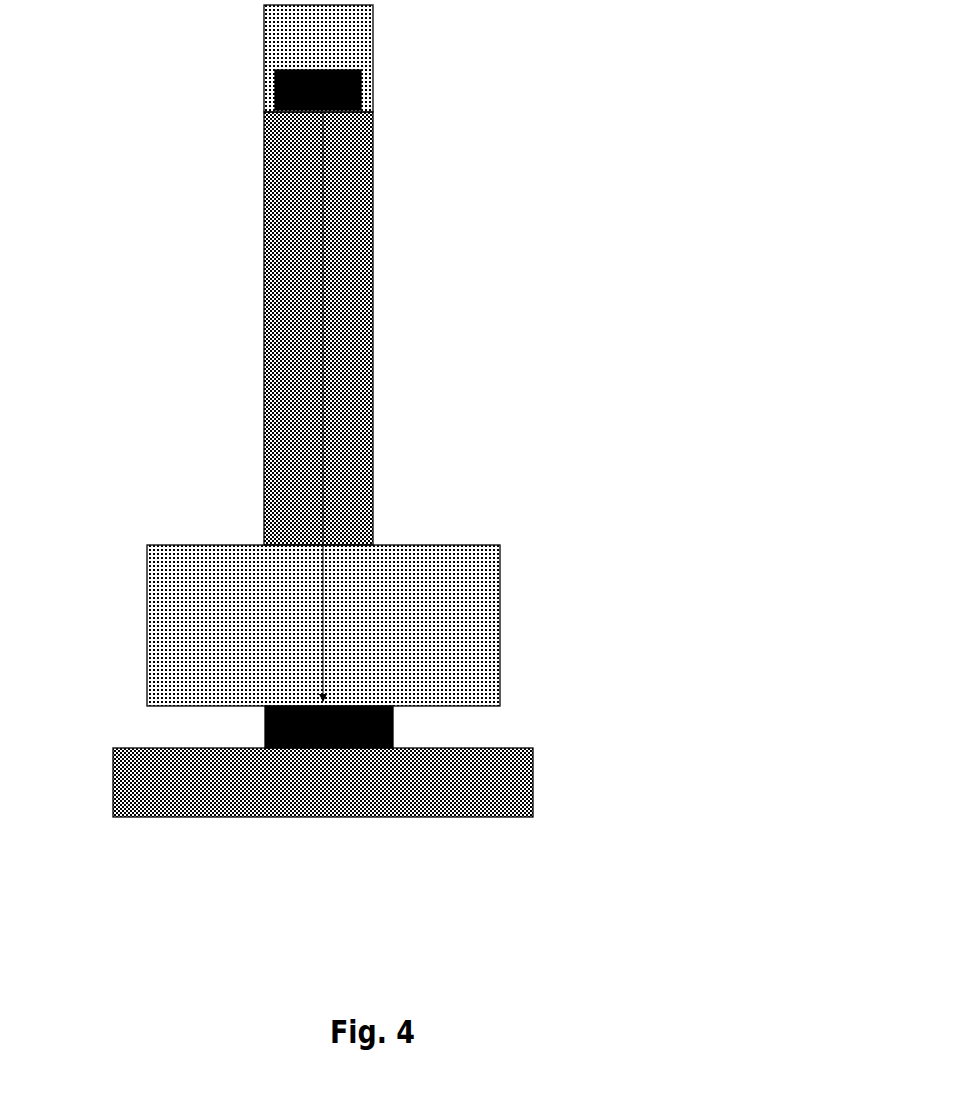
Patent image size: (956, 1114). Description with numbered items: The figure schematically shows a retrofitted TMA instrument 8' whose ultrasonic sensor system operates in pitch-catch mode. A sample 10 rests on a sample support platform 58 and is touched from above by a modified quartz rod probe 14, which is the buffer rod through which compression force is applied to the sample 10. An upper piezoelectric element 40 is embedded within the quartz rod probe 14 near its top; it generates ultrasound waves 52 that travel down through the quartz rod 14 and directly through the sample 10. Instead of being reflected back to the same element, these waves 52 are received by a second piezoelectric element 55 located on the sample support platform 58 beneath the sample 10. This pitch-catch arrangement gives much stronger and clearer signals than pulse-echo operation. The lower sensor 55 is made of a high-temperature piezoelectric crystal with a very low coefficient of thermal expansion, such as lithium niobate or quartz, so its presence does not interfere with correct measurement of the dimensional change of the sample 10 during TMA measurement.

The retrofitted TMA instrument 8' is at (777, 393).
The sample 10 is at (439, 543).
The quartz rod probe 14 is at (262, 358).
The piezoelectric element 40 is at (362, 75).
The waves 52 is at (320, 465).
The second piezoelectric element 55 is at (292, 706).
The sample support platform 58 is at (518, 745).